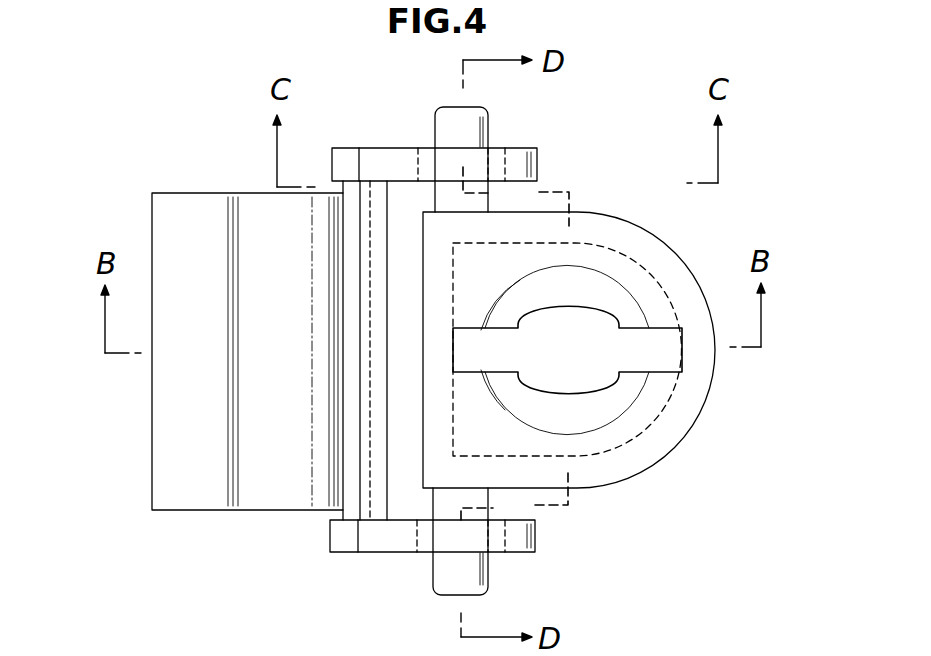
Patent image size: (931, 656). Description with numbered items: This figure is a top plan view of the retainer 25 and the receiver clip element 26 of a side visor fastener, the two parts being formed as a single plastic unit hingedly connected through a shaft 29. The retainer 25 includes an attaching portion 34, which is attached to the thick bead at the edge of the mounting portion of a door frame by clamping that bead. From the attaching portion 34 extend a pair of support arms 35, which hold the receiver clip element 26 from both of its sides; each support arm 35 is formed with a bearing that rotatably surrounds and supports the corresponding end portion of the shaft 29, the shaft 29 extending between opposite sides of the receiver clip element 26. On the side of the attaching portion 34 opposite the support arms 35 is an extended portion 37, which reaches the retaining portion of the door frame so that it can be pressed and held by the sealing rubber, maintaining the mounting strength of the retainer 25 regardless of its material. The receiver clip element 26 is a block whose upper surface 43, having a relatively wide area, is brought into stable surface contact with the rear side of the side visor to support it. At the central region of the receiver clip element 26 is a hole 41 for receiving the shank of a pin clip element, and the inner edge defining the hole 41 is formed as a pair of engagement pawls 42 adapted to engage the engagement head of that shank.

The retainer 25 is at (212, 178).
The receiver clip element 26 is at (586, 200).
The shaft 29 is at (489, 136).
The attaching portion 34 is at (322, 480).
The support arms 35 is at (376, 147).
The extended portion 37 is at (195, 487).
The hole 41 is at (573, 347).
The engagement pawls 42 is at (573, 302).
The upper surface 43 is at (683, 414).